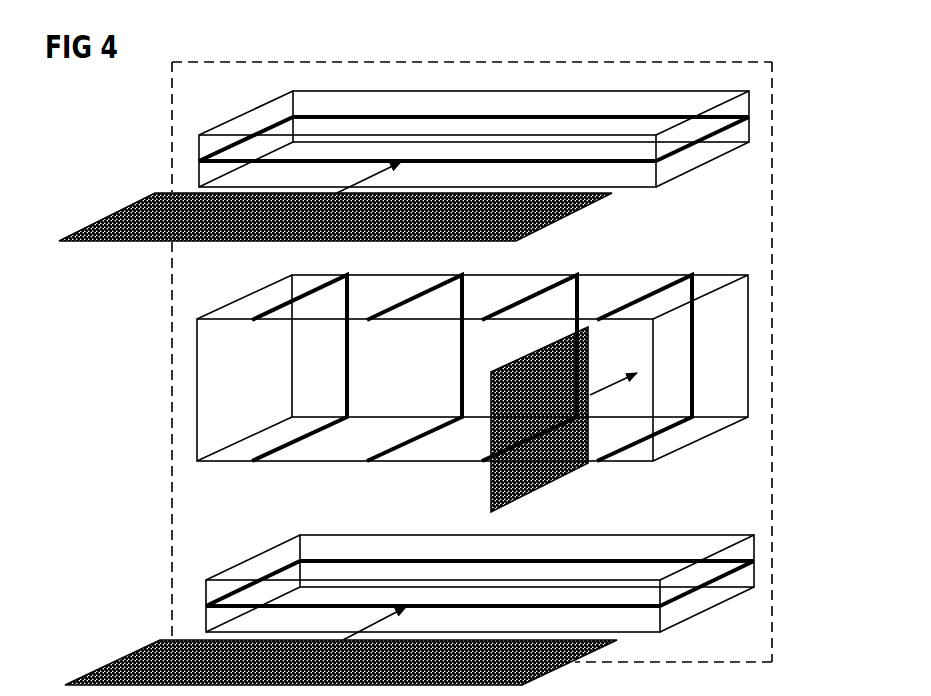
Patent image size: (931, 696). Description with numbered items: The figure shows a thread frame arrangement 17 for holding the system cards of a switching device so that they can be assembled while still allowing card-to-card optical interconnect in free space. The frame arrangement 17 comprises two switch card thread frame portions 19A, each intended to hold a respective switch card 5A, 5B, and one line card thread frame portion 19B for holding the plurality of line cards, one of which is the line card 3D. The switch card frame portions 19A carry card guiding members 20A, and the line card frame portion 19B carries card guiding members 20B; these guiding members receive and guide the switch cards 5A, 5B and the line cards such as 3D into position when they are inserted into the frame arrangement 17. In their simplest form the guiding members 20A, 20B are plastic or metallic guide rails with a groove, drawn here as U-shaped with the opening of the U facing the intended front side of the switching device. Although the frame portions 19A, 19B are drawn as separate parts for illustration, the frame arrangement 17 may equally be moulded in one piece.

The thread frame arrangement 17 is at (227, 60).
The switch card thread frame portion 19A is at (668, 92).
The card guiding member 20A is at (714, 138).
The switch card 5A is at (147, 193).
The switch card 5B is at (152, 640).
The line card thread frame portion 19B is at (707, 275).
The card guiding member 20B is at (667, 286).
The line card 3D is at (567, 478).